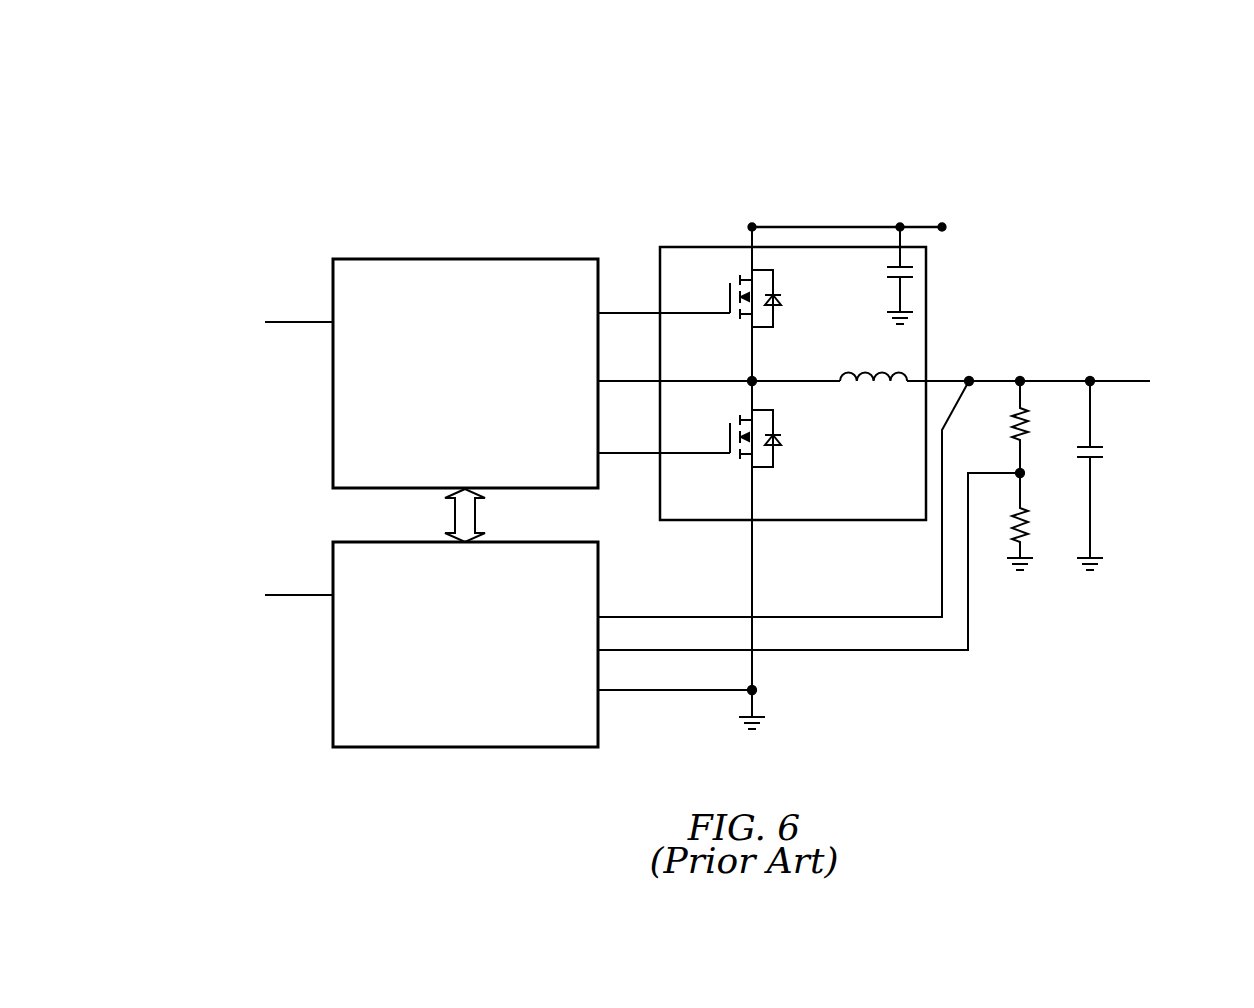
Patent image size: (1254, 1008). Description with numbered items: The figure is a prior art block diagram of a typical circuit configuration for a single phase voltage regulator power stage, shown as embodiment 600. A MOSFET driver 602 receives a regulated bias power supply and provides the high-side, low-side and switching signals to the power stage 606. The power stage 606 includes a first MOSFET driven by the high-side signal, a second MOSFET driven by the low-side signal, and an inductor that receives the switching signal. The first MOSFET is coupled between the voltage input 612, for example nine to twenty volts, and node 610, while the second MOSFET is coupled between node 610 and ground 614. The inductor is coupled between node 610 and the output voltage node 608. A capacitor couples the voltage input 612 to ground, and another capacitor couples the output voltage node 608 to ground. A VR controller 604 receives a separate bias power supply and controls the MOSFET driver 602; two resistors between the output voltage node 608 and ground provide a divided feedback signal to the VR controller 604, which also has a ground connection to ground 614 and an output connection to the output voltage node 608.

The embodiment 600 is at (266, 147).
The MOSFET driver 602 is at (447, 259).
The VR controller 604 is at (598, 578).
The power stage 606 is at (927, 327).
The output voltage node 608 is at (1150, 380).
The node 610 is at (752, 380).
The voltage input 612 is at (863, 227).
The ground 614 is at (756, 688).